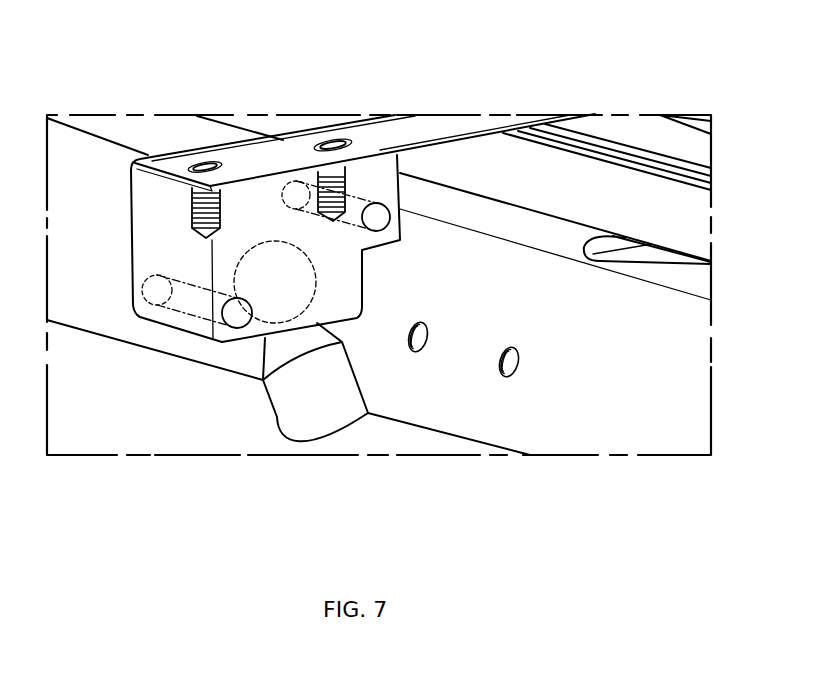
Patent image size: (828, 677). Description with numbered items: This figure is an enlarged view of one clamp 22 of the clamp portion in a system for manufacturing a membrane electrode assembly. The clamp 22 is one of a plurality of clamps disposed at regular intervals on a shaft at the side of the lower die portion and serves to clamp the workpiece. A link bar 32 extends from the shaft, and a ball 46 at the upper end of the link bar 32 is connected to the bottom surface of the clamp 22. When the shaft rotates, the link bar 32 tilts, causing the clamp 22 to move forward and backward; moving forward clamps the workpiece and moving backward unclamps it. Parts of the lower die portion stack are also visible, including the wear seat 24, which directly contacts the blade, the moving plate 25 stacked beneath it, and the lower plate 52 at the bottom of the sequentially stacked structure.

The clamp 22 is at (150, 188).
The wear seat 24 is at (658, 138).
The moving plate 25 is at (578, 186).
The link bar 32 is at (298, 408).
The ball 46 is at (258, 282).
The lower plate 52 is at (525, 415).